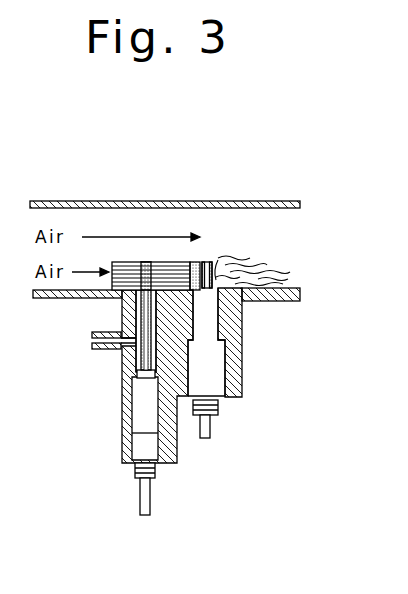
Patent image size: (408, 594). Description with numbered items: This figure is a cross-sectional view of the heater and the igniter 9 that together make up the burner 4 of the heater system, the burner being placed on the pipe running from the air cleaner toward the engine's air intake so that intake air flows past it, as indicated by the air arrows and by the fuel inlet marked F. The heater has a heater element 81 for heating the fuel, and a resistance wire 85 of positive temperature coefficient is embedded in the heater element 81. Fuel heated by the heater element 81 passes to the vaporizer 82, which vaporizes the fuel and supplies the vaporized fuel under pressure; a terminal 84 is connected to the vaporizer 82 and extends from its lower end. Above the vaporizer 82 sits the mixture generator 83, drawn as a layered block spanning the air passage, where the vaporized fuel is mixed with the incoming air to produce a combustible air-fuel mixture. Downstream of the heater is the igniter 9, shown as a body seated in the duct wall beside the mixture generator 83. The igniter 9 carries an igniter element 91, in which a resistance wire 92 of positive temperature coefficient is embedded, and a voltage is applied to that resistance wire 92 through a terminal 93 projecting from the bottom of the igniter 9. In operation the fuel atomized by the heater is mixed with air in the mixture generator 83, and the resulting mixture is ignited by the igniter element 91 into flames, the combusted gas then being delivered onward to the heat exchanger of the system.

The burner 4 is at (208, 247).
The igniter 9 is at (226, 344).
The igniter element 91 is at (214, 276).
The resistance wire 92 is at (215, 262).
The terminal 93 is at (210, 430).
The heater element 81 is at (142, 363).
The vaporizer 82 is at (138, 270).
The mixture generator 83 is at (160, 263).
The terminal 84 is at (150, 503).
The resistance wire 85 is at (140, 309).
The fuel flow F is at (84, 340).